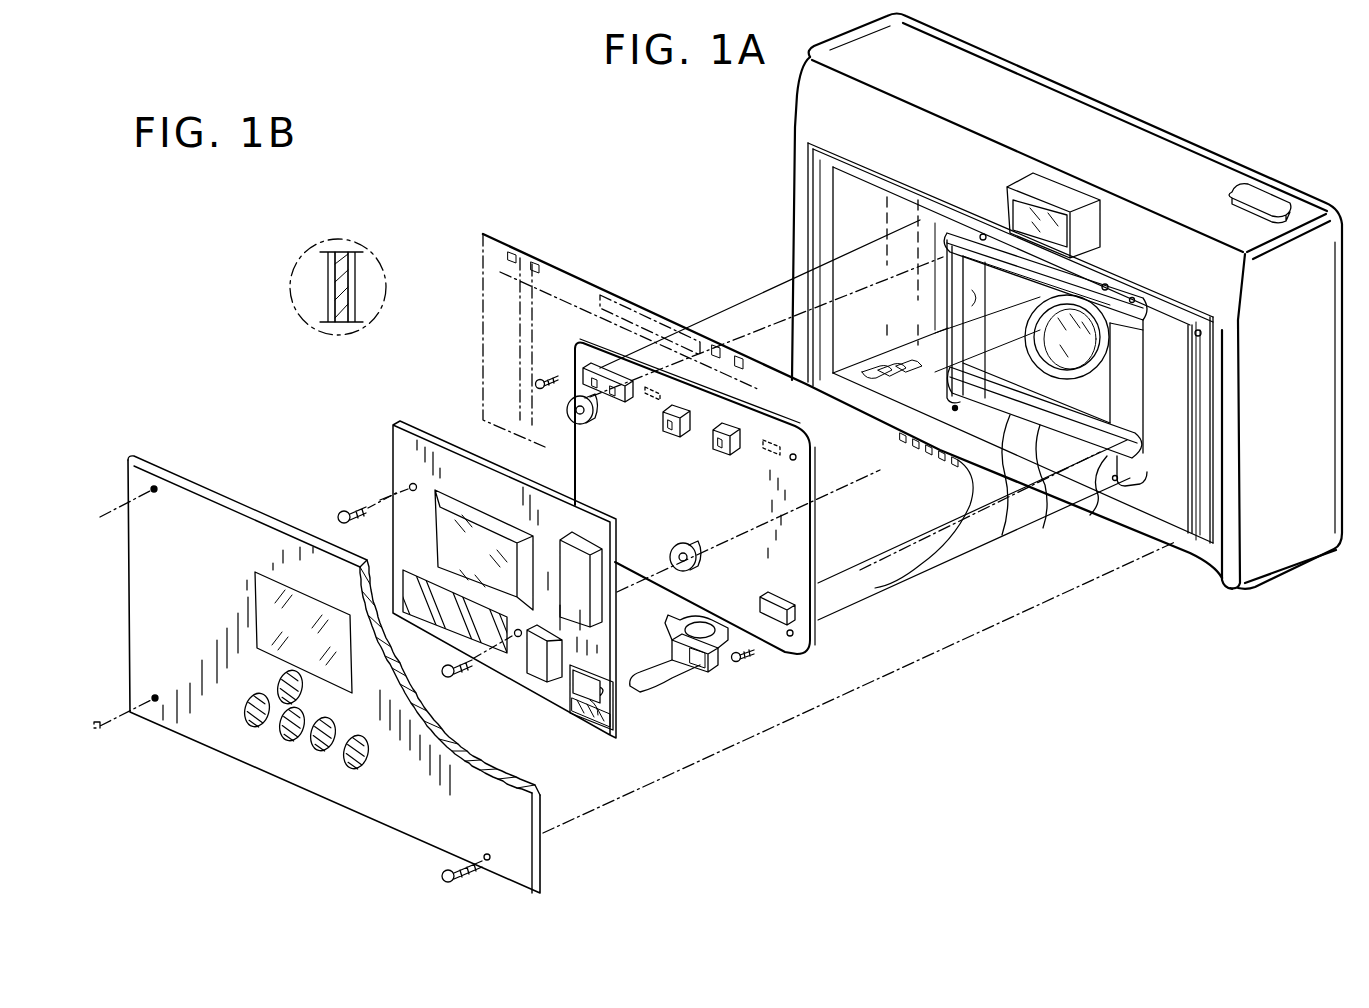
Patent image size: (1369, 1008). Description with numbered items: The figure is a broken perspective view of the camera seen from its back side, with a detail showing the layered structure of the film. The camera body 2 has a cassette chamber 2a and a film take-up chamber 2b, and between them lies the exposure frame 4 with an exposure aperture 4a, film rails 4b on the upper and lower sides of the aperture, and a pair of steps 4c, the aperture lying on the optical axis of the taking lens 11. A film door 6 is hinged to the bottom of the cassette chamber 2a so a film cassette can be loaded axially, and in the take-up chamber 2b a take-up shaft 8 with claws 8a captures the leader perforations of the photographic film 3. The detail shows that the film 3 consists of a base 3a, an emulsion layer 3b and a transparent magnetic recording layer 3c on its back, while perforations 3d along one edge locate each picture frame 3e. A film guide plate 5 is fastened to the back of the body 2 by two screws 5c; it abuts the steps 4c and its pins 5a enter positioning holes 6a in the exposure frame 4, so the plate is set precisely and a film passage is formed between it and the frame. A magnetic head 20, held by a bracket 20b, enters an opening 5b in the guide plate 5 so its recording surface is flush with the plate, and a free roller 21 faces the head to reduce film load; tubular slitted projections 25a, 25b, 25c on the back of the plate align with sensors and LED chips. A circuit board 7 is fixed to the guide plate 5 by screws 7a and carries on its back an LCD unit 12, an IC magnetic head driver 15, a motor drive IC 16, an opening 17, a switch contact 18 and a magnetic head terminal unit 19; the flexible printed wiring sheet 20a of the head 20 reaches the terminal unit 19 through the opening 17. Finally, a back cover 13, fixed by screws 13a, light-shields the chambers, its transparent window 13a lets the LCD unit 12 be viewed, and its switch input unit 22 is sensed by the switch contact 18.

In FIG. 1A, the camera body 2 is at (1145, 135).
In FIG. 1A, the cassette chamber 2a is at (850, 210).
In FIG. 1A, the film take-up chamber 2b is at (1190, 513).
In FIG. 1A, the photographic film 3 is at (568, 268).
In FIG. 1B, the base 3a is at (343, 249).
In FIG. 1B, the emulsion layer 3b is at (355, 286).
In FIG. 1B, the transparent magnetic recording layer 3c is at (328, 286).
In FIG. 1A, the perforations 3d is at (742, 345).
In FIG. 1A, the picture frame 3e is at (622, 332).
In FIG. 1A, the exposure frame 4 is at (1133, 410).
In FIG. 1A, the exposure aperture 4a is at (975, 299).
In FIG. 1A, the film rails 4b is at (1004, 504).
In FIG. 1A, the steps 4c is at (1045, 500).
In FIG. 1A, the film guide plate 5 is at (596, 340).
In FIG. 1A, the pins 5a is at (673, 370).
In FIG. 1A, the opening 5b is at (772, 637).
In FIG. 1A, the screws 5c is at (750, 660).
In FIG. 1A, the film door 6 is at (893, 368).
In FIG. 1A, the positioning holes 6a is at (983, 236).
In FIG. 1A, the circuit board 7 is at (388, 455).
In FIG. 1A, the screws 7a is at (341, 511).
In FIG. 1A, the take-up shaft 8 is at (1200, 385).
In FIG. 1A, the claws 8a is at (1203, 338).
In FIG. 1A, the taking lens 11 is at (1095, 354).
In FIG. 1A, the LCD unit 12 is at (457, 505).
In FIG. 1A, the back cover 13 is at (343, 782).
In FIG. 1A, the window 13a is at (262, 618).
In FIG. 1A, the IC magnetic head driver 15 is at (541, 673).
In FIG. 1A, the motor drive IC 16 is at (580, 576).
In FIG. 1A, the opening 17 is at (612, 710).
In FIG. 1A, the switch contact 18 is at (432, 605).
In FIG. 1A, the magnetic head terminal unit 19 is at (592, 728).
In FIG. 1A, the magnetic head 20 is at (694, 627).
In FIG. 1A, the flexible printed wiring sheet 20a is at (675, 670).
In FIG. 1A, the bracket 20b is at (712, 660).
In FIG. 1A, the free roller 21 is at (1089, 512).
In FIG. 1A, the switch input unit 22 is at (280, 748).
In FIG. 1A, the projection 25a is at (612, 395).
In FIG. 1A, the projection 25b is at (667, 437).
In FIG. 1A, the projection 25c is at (730, 458).